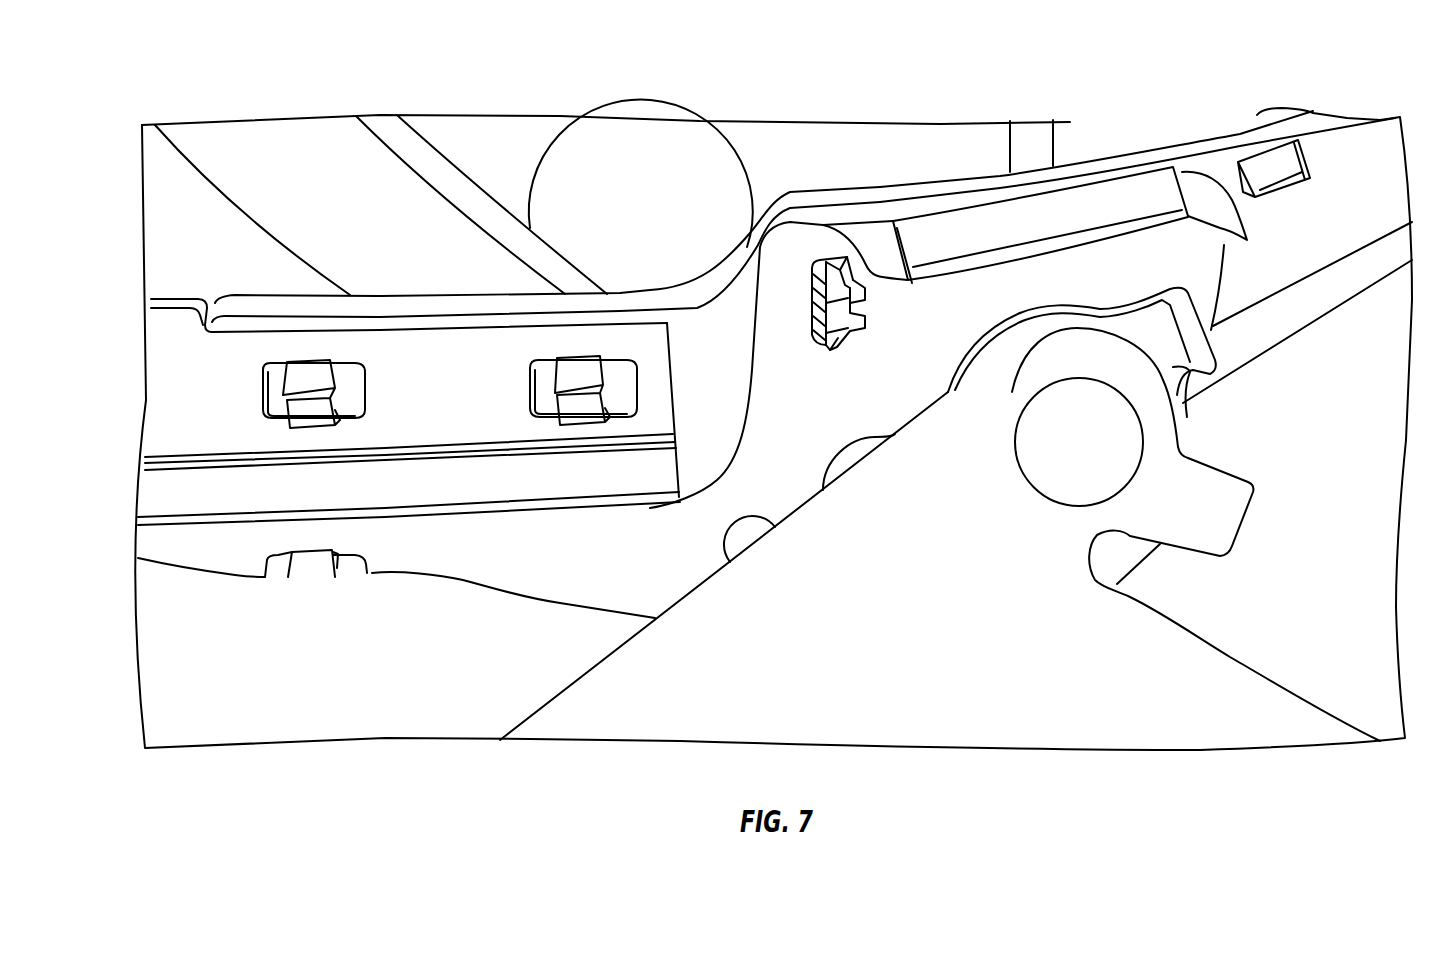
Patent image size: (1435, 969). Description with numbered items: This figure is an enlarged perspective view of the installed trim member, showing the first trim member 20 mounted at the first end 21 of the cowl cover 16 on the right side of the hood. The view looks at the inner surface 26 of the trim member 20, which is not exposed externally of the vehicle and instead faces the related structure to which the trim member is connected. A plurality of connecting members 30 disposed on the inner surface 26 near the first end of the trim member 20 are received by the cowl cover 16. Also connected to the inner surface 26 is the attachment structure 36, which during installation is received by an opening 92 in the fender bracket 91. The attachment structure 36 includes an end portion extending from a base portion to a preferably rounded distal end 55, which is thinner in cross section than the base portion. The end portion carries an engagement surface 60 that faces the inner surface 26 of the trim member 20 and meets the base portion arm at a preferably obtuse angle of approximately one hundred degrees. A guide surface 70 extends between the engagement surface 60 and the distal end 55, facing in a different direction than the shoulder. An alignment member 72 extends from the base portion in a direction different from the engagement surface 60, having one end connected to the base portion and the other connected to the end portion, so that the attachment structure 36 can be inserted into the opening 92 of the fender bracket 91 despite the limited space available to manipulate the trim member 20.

The cowl cover 16 is at (467, 237).
The first trim member 20 is at (1122, 154).
The first end of the cowl cover 21 is at (670, 367).
The inner surface 26 is at (710, 323).
The connecting members 30 is at (560, 424).
The attachment structure 36 is at (853, 340).
The distal end 55 is at (850, 279).
The engagement surface 60 is at (857, 275).
The guide surface 70 is at (865, 292).
The alignment member 72 is at (830, 266).
The fender bracket 91 is at (752, 370).
The opening 92 is at (813, 303).